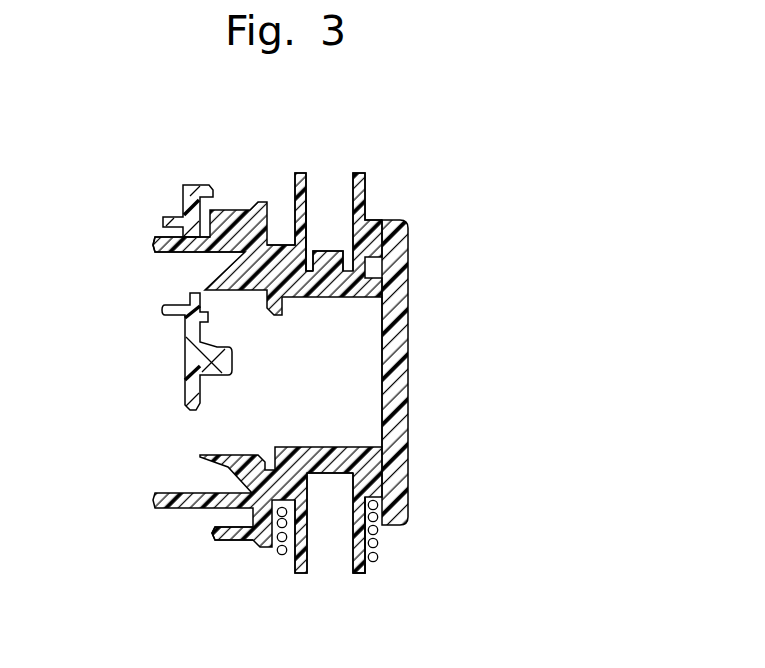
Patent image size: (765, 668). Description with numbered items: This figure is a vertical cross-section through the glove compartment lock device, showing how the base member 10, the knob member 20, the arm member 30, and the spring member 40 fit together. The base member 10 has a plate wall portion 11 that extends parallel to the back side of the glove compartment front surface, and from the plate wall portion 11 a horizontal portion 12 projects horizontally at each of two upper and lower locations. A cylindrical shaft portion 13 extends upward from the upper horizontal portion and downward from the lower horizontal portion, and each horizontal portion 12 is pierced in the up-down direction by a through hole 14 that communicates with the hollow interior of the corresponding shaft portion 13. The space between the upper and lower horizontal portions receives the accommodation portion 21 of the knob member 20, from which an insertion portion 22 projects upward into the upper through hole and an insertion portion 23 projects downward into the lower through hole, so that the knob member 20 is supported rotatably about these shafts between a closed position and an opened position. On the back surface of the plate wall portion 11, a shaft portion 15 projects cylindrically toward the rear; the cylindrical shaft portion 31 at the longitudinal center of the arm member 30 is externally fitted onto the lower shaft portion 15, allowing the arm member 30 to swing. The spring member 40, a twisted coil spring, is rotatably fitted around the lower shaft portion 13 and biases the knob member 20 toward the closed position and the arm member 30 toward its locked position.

The base member 10 is at (195, 492).
The plate wall portion 11 is at (213, 530).
The horizontal portion 12 is at (282, 245).
The shaft portion 13 is at (360, 177).
The through hole 14 is at (307, 603).
The shaft portion 15 is at (190, 255).
The knob member 20 is at (400, 288).
The accommodation portion 21 is at (384, 332).
The insertion portion 22 is at (323, 252).
The insertion portion 23 is at (348, 478).
The arm member 30 is at (193, 358).
The shaft portion 31 is at (245, 208).
The spring member 40 is at (378, 542).